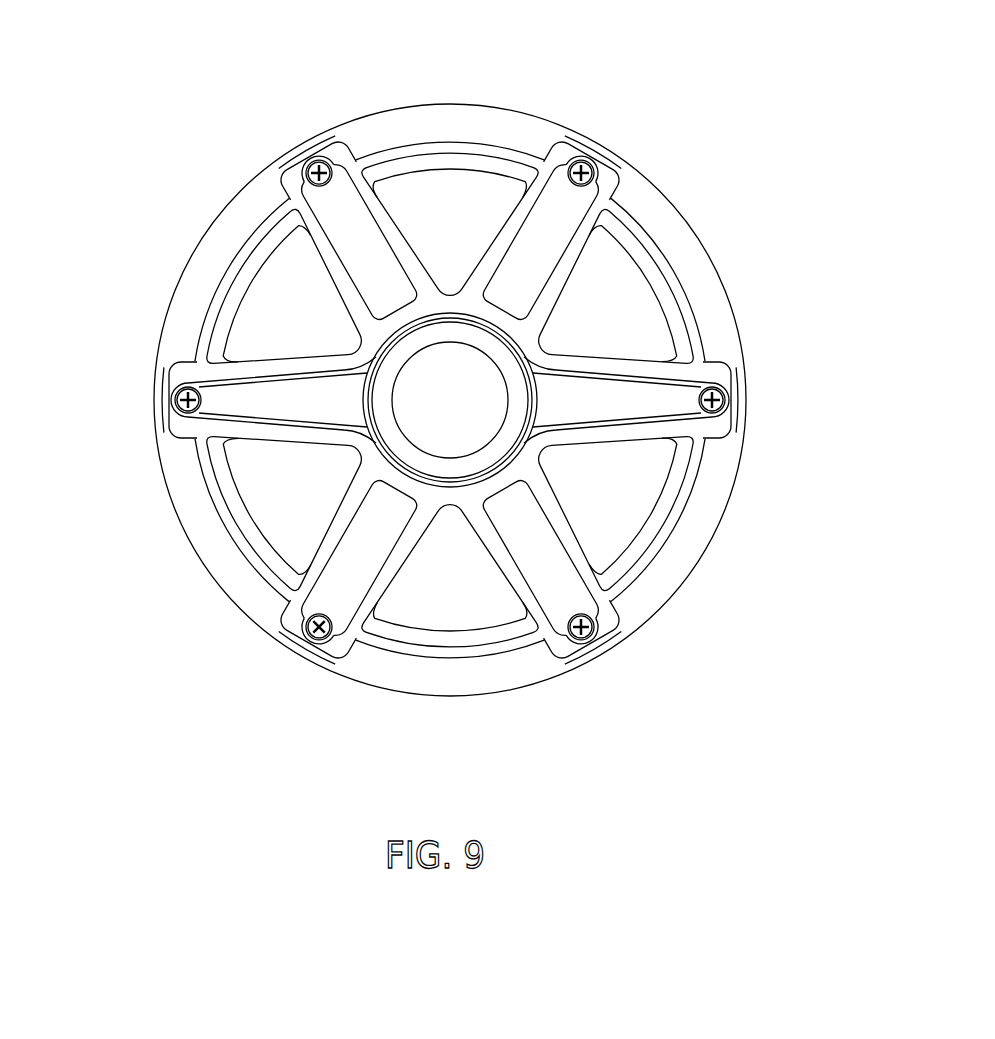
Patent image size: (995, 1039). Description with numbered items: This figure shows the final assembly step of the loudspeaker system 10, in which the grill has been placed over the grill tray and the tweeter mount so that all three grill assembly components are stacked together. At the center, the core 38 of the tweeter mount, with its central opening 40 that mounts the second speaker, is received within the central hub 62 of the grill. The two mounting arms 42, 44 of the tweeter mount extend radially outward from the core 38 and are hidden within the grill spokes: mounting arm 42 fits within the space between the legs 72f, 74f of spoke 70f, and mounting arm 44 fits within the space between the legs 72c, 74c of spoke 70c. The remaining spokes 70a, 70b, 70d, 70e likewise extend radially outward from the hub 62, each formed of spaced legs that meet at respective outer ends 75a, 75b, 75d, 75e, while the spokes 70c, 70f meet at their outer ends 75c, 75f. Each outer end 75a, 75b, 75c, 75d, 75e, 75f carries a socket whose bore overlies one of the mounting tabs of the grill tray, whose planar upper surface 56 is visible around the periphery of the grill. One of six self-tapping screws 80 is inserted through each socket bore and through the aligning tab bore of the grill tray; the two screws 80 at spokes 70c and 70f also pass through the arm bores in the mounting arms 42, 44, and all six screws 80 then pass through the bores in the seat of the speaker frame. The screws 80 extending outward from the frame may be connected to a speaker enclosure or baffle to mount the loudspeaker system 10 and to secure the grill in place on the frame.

The loudspeaker system 10 is at (716, 63).
The core 38 is at (452, 312).
The central opening 40 is at (452, 452).
The mounting arm 42 is at (276, 408).
The mounting arm 44 is at (625, 396).
The planar upper surface 56 is at (196, 282).
The central hub 62 is at (540, 350).
The spoke 70a is at (347, 148).
The spoke 70b is at (632, 190).
The spoke 70c is at (738, 364).
The spoke 70d is at (540, 655).
The spoke 70e is at (277, 625).
The spoke 70f is at (157, 426).
The leg 72c is at (692, 333).
The leg 72f is at (278, 440).
The leg 74c is at (614, 440).
The leg 74f is at (238, 350).
The outer end 75a is at (312, 165).
The outer end 75b is at (582, 160).
The outer end 75c is at (708, 412).
The outer end 75d is at (594, 578).
The outer end 75e is at (352, 640).
The outer end 75f is at (178, 390).
The self-tapping screw 80 is at (727, 401).